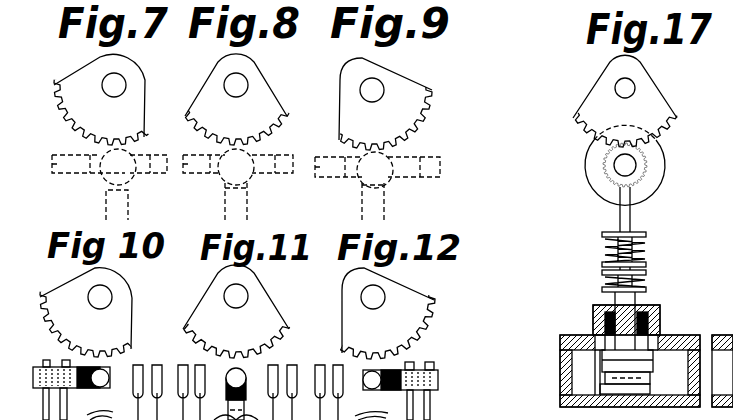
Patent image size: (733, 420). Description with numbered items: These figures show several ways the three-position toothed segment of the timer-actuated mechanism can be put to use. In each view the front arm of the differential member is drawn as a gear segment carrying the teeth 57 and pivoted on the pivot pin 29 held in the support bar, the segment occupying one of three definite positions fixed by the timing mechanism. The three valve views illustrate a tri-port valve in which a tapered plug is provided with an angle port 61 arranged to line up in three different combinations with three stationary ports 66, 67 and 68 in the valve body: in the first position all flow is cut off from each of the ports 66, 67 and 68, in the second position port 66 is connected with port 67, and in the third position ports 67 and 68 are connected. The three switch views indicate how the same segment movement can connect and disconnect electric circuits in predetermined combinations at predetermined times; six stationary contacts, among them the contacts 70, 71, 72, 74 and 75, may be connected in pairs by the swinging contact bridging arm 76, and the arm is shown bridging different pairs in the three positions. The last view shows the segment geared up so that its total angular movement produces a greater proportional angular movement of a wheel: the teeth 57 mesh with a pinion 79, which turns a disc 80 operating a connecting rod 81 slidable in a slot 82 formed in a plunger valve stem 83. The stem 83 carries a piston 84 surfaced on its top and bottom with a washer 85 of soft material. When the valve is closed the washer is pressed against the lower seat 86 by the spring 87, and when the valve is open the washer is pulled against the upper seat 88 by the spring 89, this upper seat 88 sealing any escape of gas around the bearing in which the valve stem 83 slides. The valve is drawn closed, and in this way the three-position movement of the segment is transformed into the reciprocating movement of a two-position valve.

In FIG. 7, the pivot pin 29 is at (120, 86).
In FIG. 8, the pivot pin 29 is at (236, 85).
In FIG. 9, the pivot pin 29 is at (372, 90).
In FIG. 10, the pivot pin 29 is at (111, 298).
In FIG. 11, the pivot pin 29 is at (236, 296).
In FIG. 12, the pivot pin 29 is at (373, 297).
In FIG. 17, the pivot pin 29 is at (630, 89).
In FIG. 7, the teeth 57 is at (134, 138).
In FIG. 8, the teeth 57 is at (236, 85).
In FIG. 9, the teeth 57 is at (372, 90).
In FIG. 10, the teeth 57 is at (85, 298).
In FIG. 11, the teeth 57 is at (236, 296).
In FIG. 12, the teeth 57 is at (373, 297).
In FIG. 17, the teeth 57 is at (666, 127).
In FIG. 7, the angle port 61 is at (110, 177).
In FIG. 8, the angle port 61 is at (243, 181).
In FIG. 9, the angle port 61 is at (391, 163).
In FIG. 7, the port 66 is at (63, 157).
In FIG. 8, the port 66 is at (193, 150).
In FIG. 9, the port 66 is at (342, 175).
In FIG. 7, the port 67 is at (117, 205).
In FIG. 8, the port 67 is at (234, 210).
In FIG. 9, the port 67 is at (378, 213).
In FIG. 7, the port 68 is at (141, 175).
In FIG. 8, the port 68 is at (281, 167).
In FIG. 9, the port 68 is at (436, 166).
In FIG. 10, the stationary contact 70 is at (44, 397).
In FIG. 11, the stationary contact 70 is at (186, 364).
In FIG. 12, the stationary contact 70 is at (320, 364).
In FIG. 10, the stationary contact 71 is at (65, 395).
In FIG. 11, the stationary contact 71 is at (203, 365).
In FIG. 12, the stationary contact 71 is at (338, 364).
In FIG. 10, the stationary contact 72 is at (107, 404).
In FIG. 11, the stationary contact 72 is at (236, 394).
In FIG. 12, the stationary contact 72 is at (395, 394).
In FIG. 10, the stationary contact 74 is at (140, 366).
In FIG. 11, the stationary contact 74 is at (271, 365).
In FIG. 12, the stationary contact 74 is at (409, 364).
In FIG. 10, the stationary contact 75 is at (160, 366).
In FIG. 11, the stationary contact 75 is at (291, 363).
In FIG. 12, the stationary contact 75 is at (431, 364).
In FIG. 10, the swinging contact bridging arm 76 is at (35, 375).
In FIG. 12, the swinging contact bridging arm 76 is at (439, 383).
In FIG. 17, the pinion 79 is at (608, 180).
In FIG. 17, the disc 80 is at (600, 156).
In FIG. 17, the connecting rod 81 is at (630, 210).
In FIG. 17, the slot 82 is at (607, 286).
In FIG. 17, the plunger valve stem 83 is at (636, 305).
In FIG. 17, the piston 84 is at (645, 362).
In FIG. 17, the washer 85 is at (650, 346).
In FIG. 17, the lower seat 86 is at (600, 387).
In FIG. 17, the spring 87 is at (647, 290).
In FIG. 17, the upper seat 88 is at (652, 167).
In FIG. 17, the spring 89 is at (605, 252).